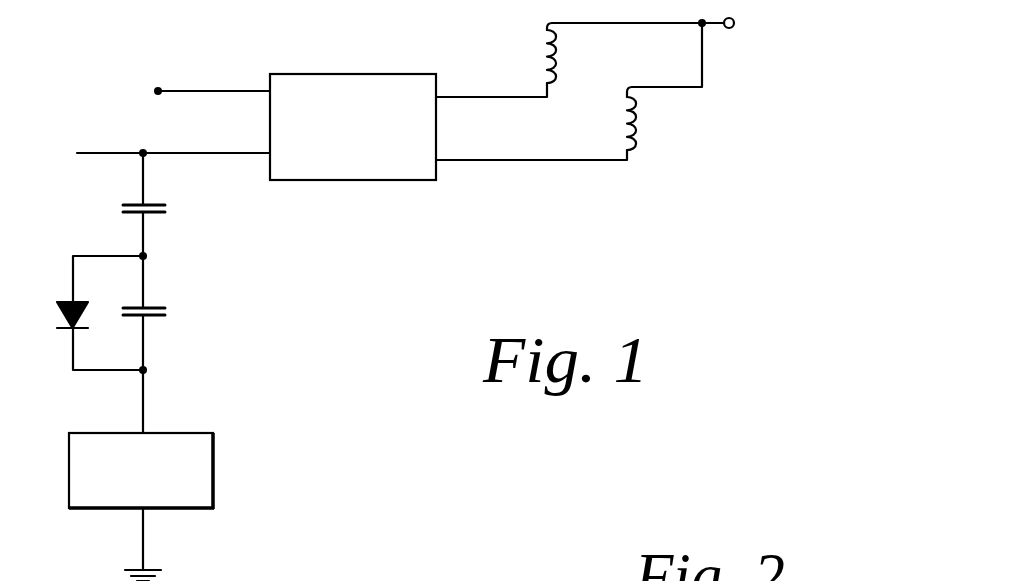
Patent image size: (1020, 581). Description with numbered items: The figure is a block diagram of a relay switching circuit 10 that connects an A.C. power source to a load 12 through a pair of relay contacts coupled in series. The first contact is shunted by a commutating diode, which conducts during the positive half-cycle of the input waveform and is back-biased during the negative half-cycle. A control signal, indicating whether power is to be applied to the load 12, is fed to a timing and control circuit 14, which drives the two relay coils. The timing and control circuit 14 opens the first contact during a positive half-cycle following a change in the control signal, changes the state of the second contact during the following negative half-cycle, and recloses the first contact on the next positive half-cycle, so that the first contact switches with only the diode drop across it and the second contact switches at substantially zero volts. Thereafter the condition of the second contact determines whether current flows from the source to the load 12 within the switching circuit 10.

The relay switching circuit 10 is at (433, 213).
The load 12 is at (80, 435).
The timing and control circuit 14 is at (283, 78).